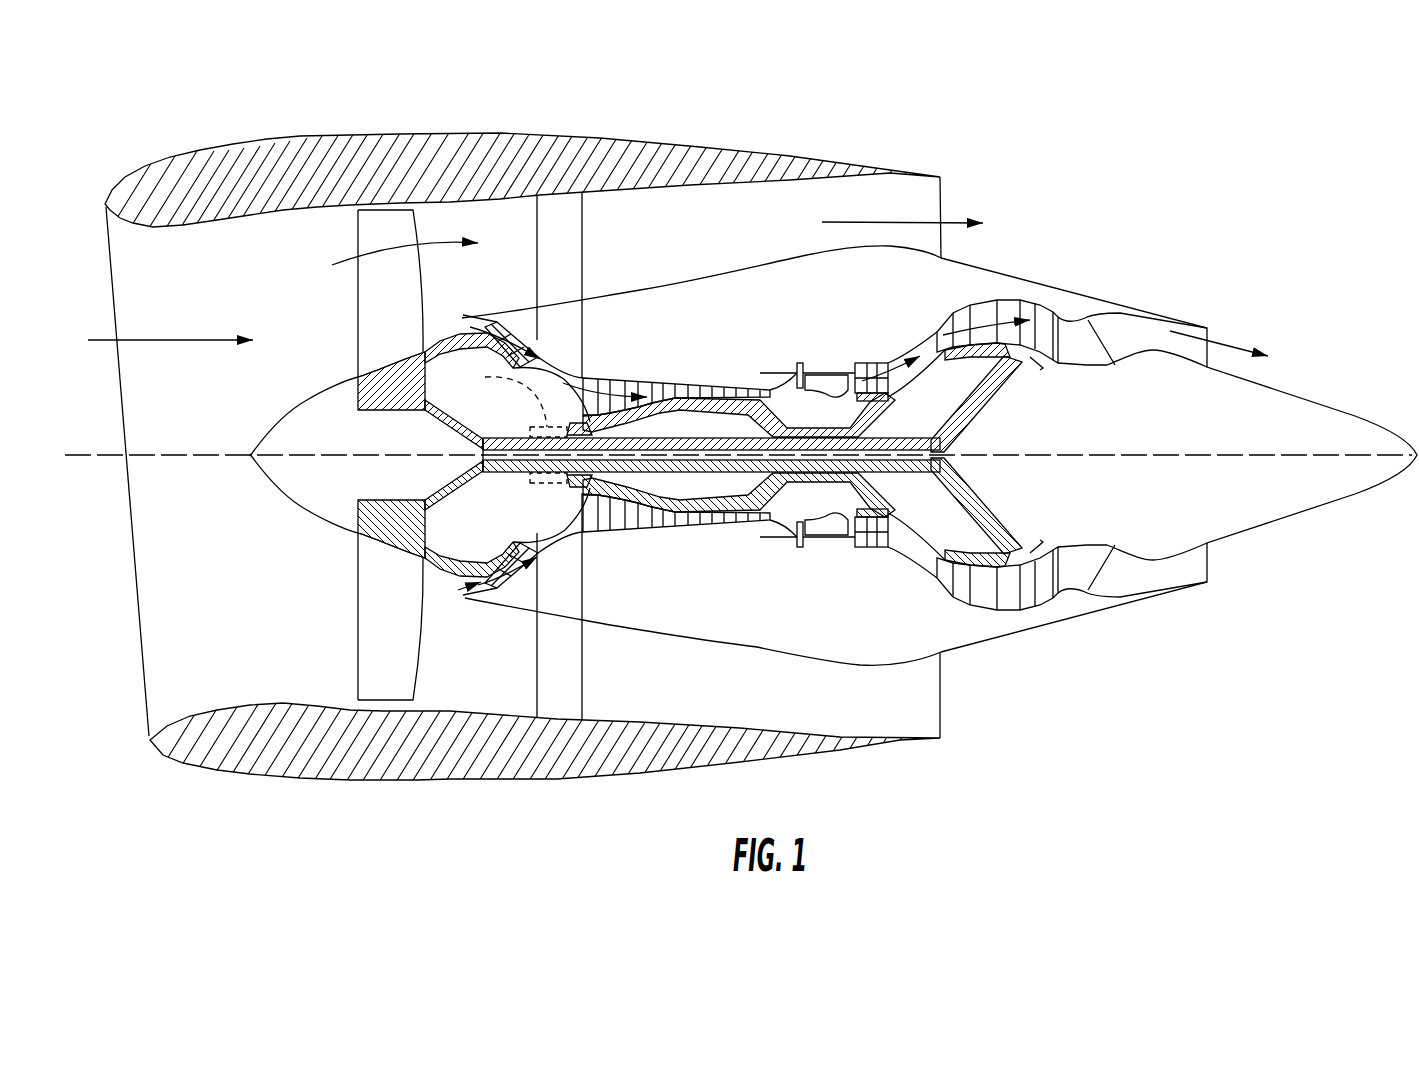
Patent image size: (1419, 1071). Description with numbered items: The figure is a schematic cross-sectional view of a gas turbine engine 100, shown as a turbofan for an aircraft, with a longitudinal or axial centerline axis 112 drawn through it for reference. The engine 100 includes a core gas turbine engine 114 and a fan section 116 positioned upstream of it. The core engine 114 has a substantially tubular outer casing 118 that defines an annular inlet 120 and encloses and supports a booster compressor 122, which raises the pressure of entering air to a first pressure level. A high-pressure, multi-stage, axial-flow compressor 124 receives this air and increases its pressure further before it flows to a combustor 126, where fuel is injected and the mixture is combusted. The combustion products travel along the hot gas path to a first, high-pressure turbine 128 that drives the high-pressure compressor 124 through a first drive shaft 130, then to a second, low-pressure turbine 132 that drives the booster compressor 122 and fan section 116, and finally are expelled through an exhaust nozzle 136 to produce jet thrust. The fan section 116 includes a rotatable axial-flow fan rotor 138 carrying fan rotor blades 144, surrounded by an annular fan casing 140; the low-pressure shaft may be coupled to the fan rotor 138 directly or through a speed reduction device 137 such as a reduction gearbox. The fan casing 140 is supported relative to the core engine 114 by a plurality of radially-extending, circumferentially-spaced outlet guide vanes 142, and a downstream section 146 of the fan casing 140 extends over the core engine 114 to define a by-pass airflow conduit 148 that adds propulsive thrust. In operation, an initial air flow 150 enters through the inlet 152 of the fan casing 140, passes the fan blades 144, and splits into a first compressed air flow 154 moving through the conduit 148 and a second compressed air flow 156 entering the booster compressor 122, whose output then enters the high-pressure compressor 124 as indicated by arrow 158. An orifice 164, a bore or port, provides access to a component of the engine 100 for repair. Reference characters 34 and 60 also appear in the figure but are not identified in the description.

The gas turbine engine 100 is at (1112, 167).
The longitudinal centerline axis 112 is at (1100, 453).
The core gas turbine engine 114 is at (777, 322).
The fan section 116 is at (403, 122).
The outer casing 118 is at (757, 650).
The annular inlet 120 is at (458, 590).
The booster compressor 122 is at (538, 560).
The high-pressure compressor 124 is at (618, 527).
The combustor 126 is at (823, 530).
The first turbine 128 is at (905, 543).
The first drive shaft 130 is at (818, 425).
The second turbine 132 is at (1112, 592).
The exhaust nozzle 136 is at (1212, 327).
The speed reduction device 137 is at (497, 394).
The rotor component 34 is at (537, 426).
The fan rotor 138 is at (425, 405).
The fan casing 140 is at (370, 778).
The outlet guide vanes 142 is at (585, 219).
The fan rotor blades 144 is at (358, 650).
The downstream section 146 is at (789, 156).
The by-pass airflow conduit 148 is at (747, 237).
The initial air flow 150 is at (191, 341).
The inlet 152 is at (142, 700).
The first compressed air flow 154 is at (381, 248).
The second compressed air flow 156 is at (443, 330).
The flow into high-pressure compressor 158 is at (607, 377).
The orifice 164 is at (860, 382).
The turbine nozzle 60 is at (867, 378).